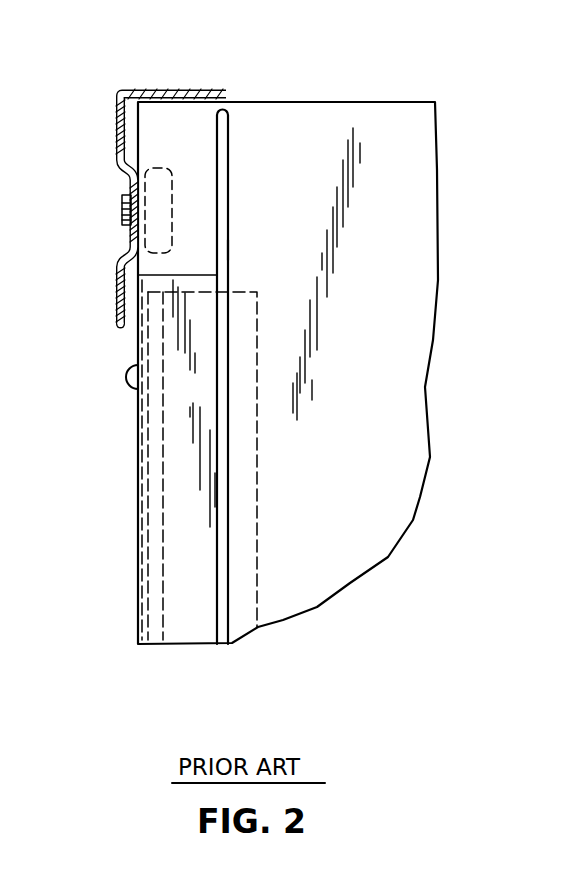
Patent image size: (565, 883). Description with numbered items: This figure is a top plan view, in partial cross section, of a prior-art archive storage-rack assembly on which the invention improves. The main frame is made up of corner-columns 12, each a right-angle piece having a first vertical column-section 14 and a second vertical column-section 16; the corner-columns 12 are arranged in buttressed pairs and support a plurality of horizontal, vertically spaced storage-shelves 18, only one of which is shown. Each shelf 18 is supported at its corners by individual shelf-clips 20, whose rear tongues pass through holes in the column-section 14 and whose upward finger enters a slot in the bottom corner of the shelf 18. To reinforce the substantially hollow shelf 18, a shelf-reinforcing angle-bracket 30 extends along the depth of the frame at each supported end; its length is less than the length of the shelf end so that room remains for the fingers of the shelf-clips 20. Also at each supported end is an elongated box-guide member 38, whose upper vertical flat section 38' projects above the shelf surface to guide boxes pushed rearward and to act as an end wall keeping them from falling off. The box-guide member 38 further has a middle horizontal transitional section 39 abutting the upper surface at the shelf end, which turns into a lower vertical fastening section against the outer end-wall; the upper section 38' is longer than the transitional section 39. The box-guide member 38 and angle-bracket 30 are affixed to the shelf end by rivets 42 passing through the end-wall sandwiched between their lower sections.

The corner-column 12 is at (178, 85).
The first vertical column-section 14 is at (116, 140).
The second vertical column-section 16 is at (200, 88).
The storage-shelf 18 is at (400, 224).
The shelf-clip 20 is at (121, 207).
The shelf-reinforcing angle-bracket 30 is at (190, 468).
The box-guide member 38 is at (261, 377).
The upper vertical flat section 38' is at (265, 242).
The middle horizontal transitional section 39 is at (203, 402).
The rivet 42 is at (126, 380).